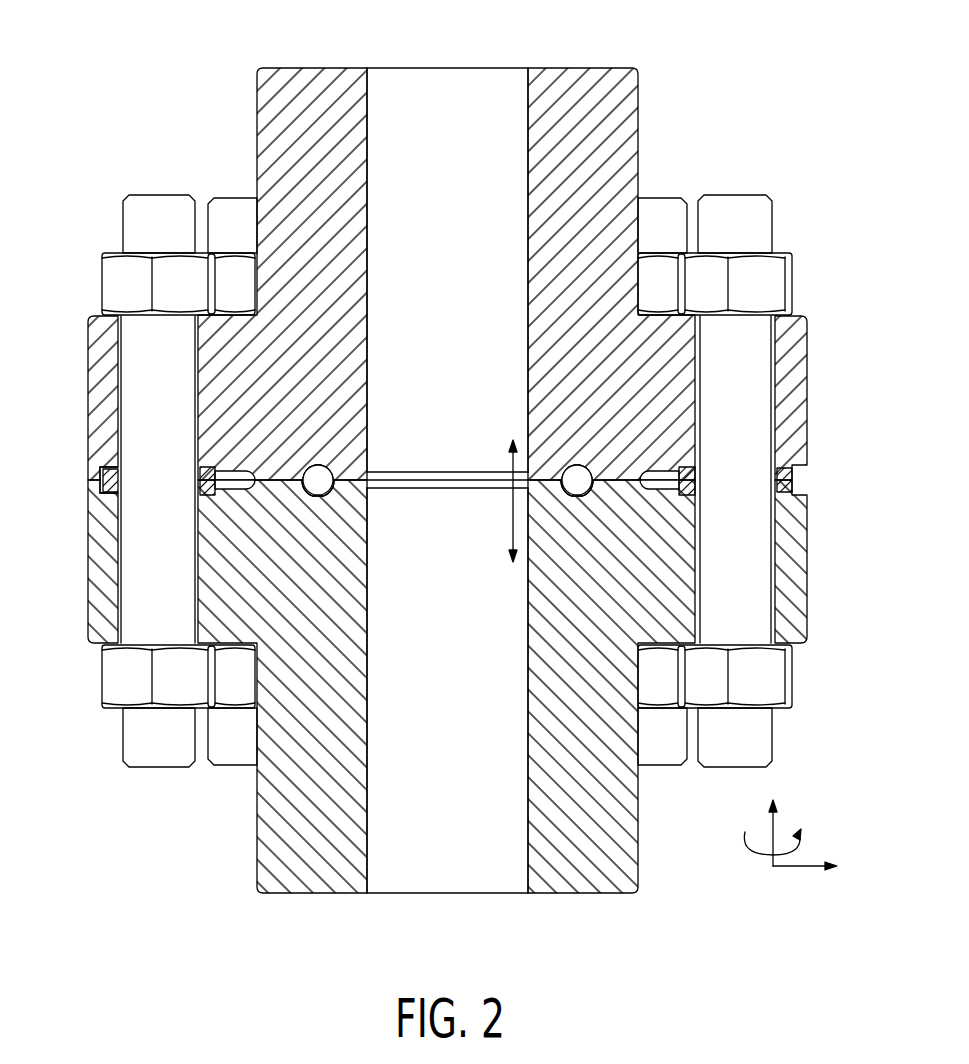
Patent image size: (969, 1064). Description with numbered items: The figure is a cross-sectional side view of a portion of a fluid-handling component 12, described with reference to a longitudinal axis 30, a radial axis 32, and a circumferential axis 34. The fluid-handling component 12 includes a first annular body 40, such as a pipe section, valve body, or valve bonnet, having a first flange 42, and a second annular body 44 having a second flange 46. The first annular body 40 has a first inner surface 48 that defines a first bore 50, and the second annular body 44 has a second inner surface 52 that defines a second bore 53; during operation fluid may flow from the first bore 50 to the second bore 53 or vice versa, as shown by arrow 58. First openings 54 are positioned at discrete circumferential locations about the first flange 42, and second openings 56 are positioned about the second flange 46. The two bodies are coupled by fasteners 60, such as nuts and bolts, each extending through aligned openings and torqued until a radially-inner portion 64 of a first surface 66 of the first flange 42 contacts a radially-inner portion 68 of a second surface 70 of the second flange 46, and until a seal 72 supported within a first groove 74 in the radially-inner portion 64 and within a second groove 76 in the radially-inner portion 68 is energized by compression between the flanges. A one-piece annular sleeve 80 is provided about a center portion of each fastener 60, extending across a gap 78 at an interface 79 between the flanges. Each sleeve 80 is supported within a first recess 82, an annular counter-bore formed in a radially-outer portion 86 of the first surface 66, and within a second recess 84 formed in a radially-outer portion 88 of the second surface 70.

The fluid-handling component 12 is at (435, 455).
The longitudinal axis 30 is at (770, 830).
The radial axis 32 is at (797, 867).
The circumferential axis 34 is at (760, 852).
The first annular body 40 is at (237, 826).
The first flange 42 is at (88, 546).
The second annular body 44 is at (235, 110).
The second flange 46 is at (90, 352).
The first inner surface 48 is at (528, 604).
The first bore 50 is at (500, 682).
The second inner surface 52 is at (528, 252).
The second bore 53 is at (500, 329).
The first openings 54 is at (118, 620).
The second openings 56 is at (118, 391).
The arrow 58 is at (512, 528).
The fasteners 60 is at (137, 430).
The radially-inner portion of the first surface 64 is at (350, 483).
The first surface 66 is at (447, 529).
The radially-inner portion of the second surface 68 is at (350, 472).
The second surface 70 is at (444, 423).
The seal 72 is at (312, 470).
The first groove 74 is at (337, 492).
The second groove 76 is at (343, 463).
The gap 78 is at (86, 477).
The interface 79 is at (85, 492).
The sleeve 80 is at (101, 481).
The first recess 82 is at (103, 506).
The second recess 84 is at (113, 462).
The radially-outer portion of the first surface 86 is at (237, 490).
The radially-outer portion of the second surface 88 is at (228, 468).